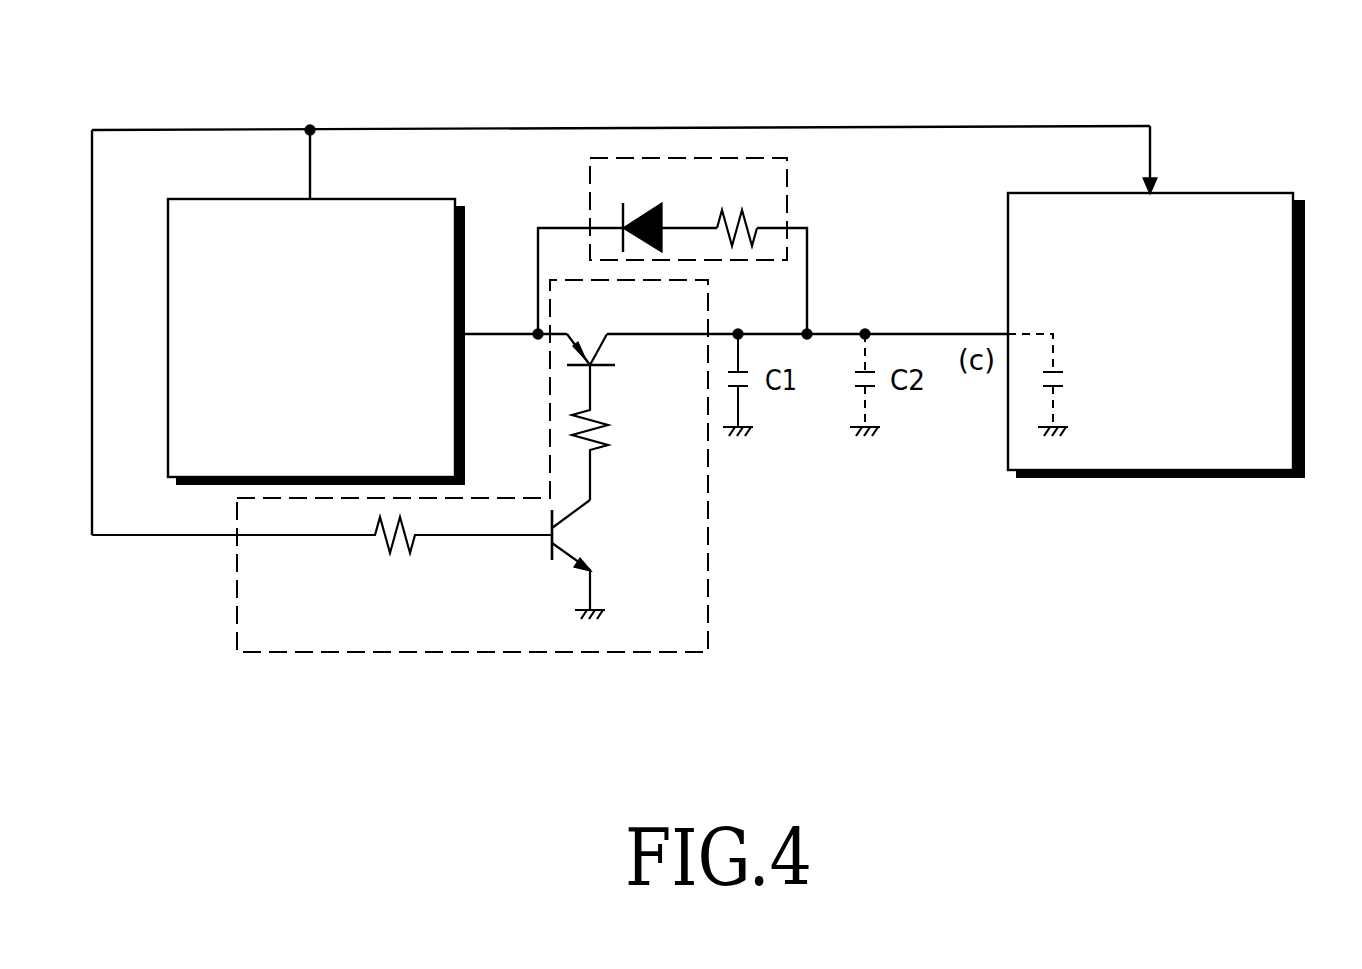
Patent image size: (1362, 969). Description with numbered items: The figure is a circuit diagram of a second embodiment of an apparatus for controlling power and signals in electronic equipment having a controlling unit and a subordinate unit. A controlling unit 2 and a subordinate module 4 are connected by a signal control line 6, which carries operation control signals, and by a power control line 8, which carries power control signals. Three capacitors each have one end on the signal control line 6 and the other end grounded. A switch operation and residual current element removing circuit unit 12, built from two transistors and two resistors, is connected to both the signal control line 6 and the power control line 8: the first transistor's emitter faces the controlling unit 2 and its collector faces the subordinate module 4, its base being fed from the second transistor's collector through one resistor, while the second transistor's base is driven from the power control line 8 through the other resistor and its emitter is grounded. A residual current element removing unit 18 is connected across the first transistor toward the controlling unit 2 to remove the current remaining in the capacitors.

The controlling unit 2 is at (167, 338).
The subordinate module 4 is at (1305, 330).
The signal control line 6 is at (492, 334).
The power control line 8 is at (413, 129).
The switch operation and residual current element removing circuit unit 12 is at (712, 583).
The residual current element removing unit 18 is at (790, 196).